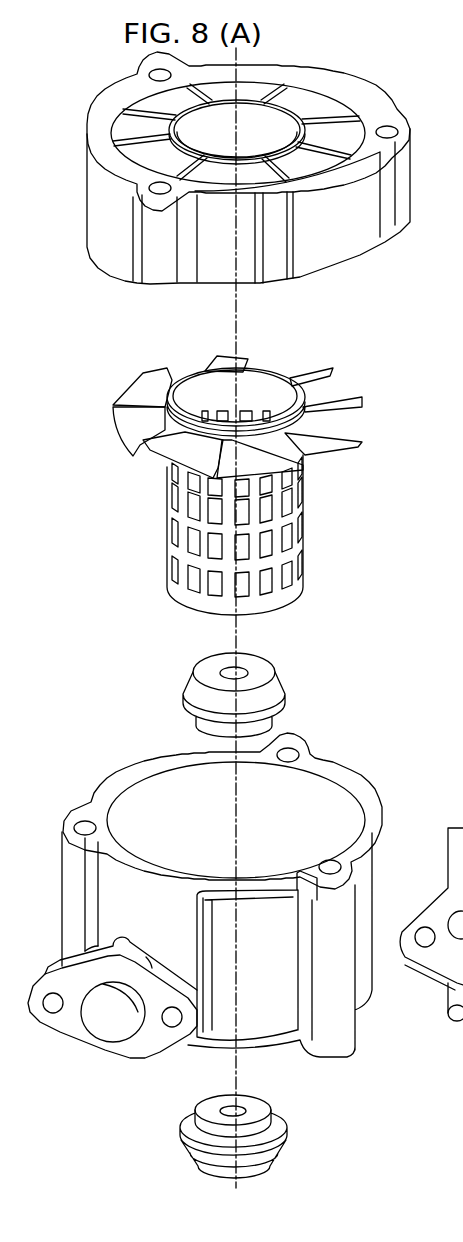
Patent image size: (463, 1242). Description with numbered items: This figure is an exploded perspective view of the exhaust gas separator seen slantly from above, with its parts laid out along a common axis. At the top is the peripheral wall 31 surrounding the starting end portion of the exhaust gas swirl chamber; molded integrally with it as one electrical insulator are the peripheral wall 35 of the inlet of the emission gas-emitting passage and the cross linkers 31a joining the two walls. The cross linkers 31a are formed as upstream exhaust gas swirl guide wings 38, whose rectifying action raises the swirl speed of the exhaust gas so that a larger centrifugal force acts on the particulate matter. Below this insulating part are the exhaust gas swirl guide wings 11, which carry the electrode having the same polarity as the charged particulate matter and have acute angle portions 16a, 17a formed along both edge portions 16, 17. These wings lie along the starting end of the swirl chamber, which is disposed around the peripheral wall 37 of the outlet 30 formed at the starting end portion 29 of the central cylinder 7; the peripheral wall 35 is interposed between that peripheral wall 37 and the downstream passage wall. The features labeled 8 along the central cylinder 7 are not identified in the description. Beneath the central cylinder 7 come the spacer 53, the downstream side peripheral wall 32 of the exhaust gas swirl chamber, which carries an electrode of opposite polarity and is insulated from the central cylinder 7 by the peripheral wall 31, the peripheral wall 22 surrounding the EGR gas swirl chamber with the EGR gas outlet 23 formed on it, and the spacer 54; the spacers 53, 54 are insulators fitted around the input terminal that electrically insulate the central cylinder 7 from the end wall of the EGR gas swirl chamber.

The peripheral wall surrounding the starting end portion of the exhaust gas swirl ch 31 is at (272, 158).
The peripheral wall of the inlet of the emission gas-emitting passage 35 is at (293, 113).
The cross linkers 31a is at (285, 122).
The upstream exhaust gas swirl guide wings 38 is at (340, 147).
The outlet of the central cylinder 30 is at (197, 385).
The starting end portion of the central cylinder 29 is at (177, 383).
The peripheral wall of the outlet of the central cylinder 37 is at (163, 413).
The acute angle portion 17a is at (325, 430).
The edge portion 17 is at (340, 432).
The exhaust gas swirl guide wings 11 is at (226, 420).
The edge portion 16 is at (318, 438).
The acute angle portion 16a is at (307, 447).
The central cylinder 7 is at (240, 535).
The strainer slots 8 is at (170, 562).
The spacer 53 is at (278, 695).
The downstream side peripheral wall of the exhaust gas swirl chamber 32 is at (245, 919).
The peripheral wall surrounding the EGR gas swirl chamber 22 is at (362, 957).
The EGR gas outlet 23 is at (117, 1027).
The spacer 54 is at (277, 1147).